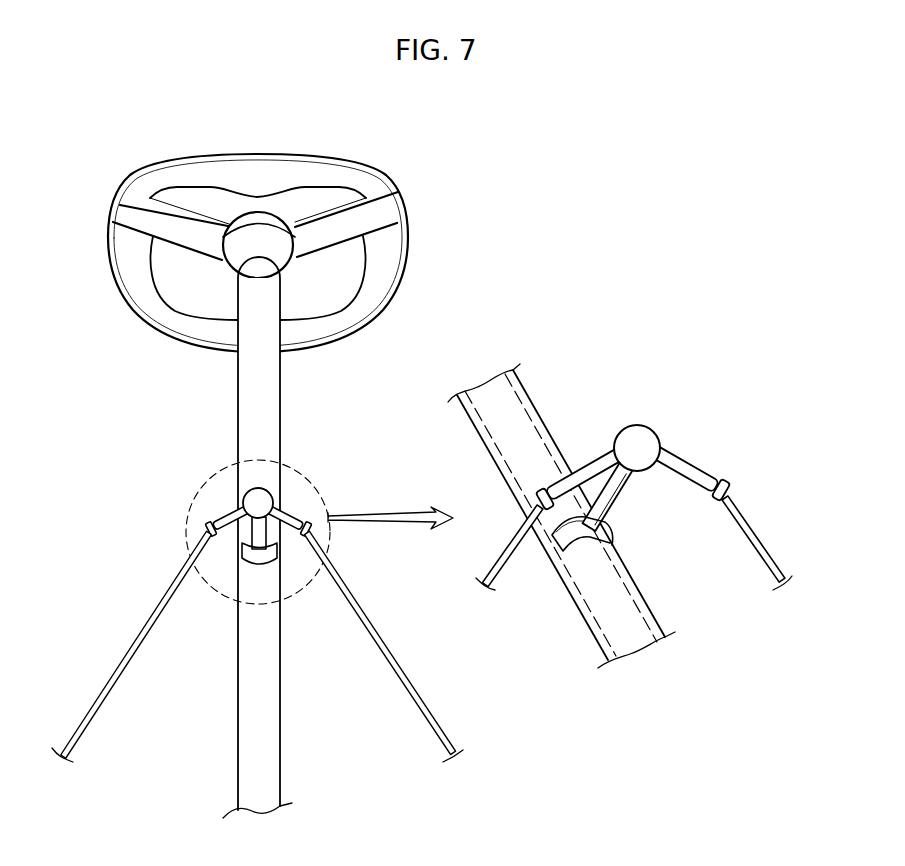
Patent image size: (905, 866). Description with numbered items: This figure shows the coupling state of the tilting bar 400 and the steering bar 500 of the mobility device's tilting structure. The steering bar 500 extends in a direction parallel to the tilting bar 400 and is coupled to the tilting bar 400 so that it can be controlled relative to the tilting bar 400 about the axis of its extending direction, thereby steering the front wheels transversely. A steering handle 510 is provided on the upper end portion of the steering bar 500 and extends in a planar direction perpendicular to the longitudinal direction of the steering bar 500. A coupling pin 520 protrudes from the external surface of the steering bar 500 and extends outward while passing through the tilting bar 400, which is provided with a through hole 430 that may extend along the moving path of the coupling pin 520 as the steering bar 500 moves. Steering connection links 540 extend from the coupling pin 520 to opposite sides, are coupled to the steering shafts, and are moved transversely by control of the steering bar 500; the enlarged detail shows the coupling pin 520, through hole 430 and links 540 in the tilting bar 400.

The tilting bar 400 is at (258, 406).
The through hole 430 is at (555, 540).
The steering bar 500 is at (473, 432).
The steering handle 510 is at (388, 256).
The coupling pin 520 is at (617, 493).
The steering connection links 540 is at (140, 635).